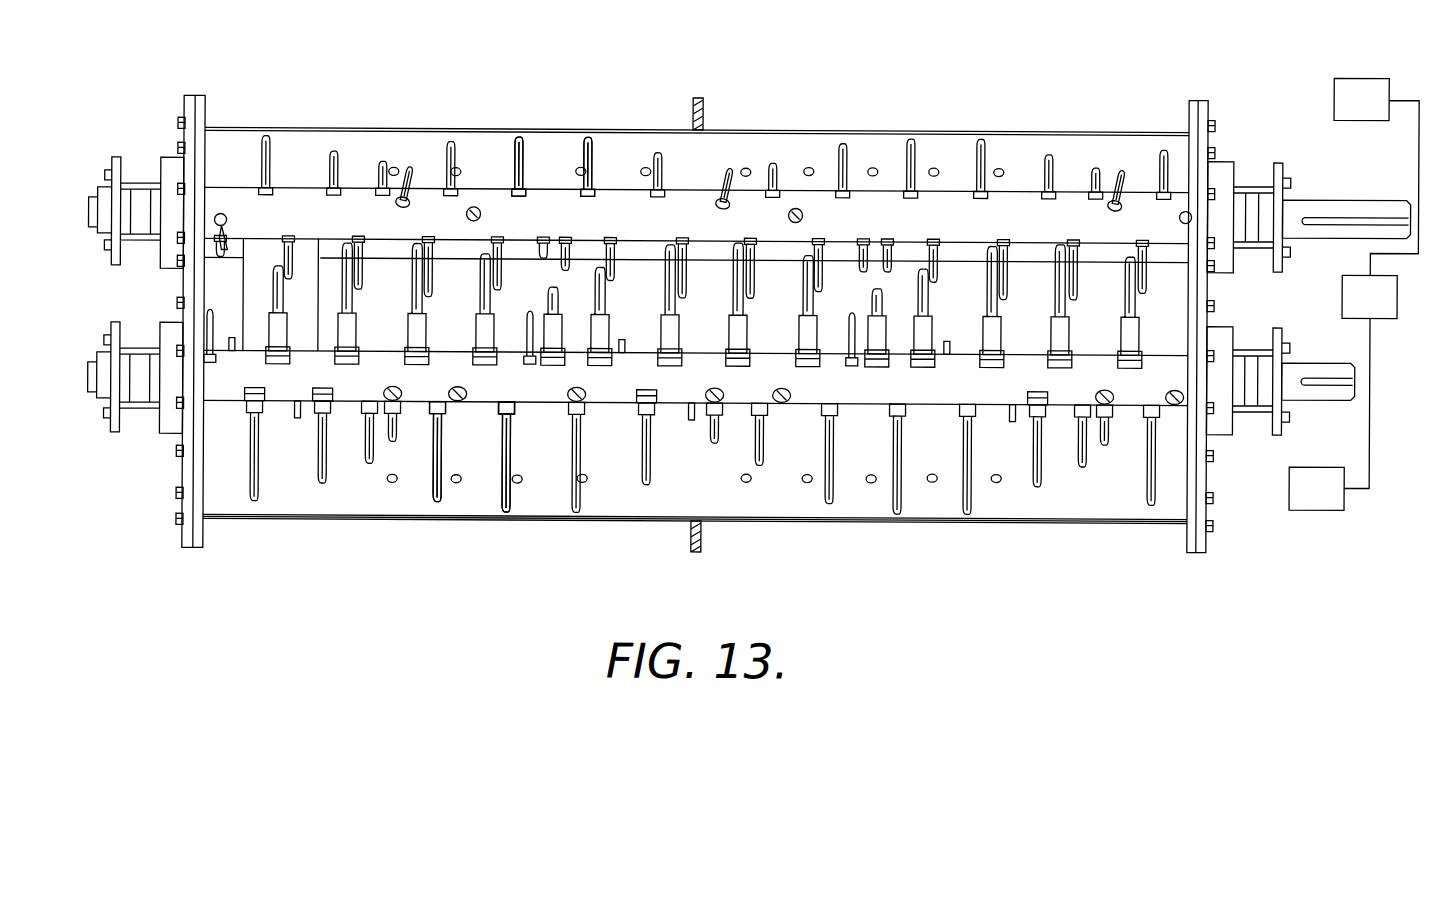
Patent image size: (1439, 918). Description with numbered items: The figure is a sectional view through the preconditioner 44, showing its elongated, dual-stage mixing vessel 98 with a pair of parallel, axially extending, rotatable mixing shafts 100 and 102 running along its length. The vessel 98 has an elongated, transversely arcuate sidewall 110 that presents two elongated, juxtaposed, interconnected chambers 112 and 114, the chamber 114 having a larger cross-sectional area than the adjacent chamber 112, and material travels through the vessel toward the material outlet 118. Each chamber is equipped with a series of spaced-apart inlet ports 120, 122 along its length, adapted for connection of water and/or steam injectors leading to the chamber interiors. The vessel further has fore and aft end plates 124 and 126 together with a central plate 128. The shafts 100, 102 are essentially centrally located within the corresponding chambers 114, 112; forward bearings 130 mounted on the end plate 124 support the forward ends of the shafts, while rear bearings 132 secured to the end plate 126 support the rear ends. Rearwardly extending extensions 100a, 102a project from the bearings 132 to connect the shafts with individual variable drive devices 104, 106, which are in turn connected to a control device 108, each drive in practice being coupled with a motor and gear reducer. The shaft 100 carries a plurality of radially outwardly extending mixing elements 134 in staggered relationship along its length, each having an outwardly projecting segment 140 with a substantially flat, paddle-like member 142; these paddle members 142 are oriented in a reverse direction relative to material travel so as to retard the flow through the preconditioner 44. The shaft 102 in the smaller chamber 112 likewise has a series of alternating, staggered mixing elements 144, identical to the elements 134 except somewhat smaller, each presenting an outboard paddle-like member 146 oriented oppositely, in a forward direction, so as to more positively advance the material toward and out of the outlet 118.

The preconditioner 44 is at (1063, 58).
The mixing vessel 98 is at (908, 525).
The mixing shaft 100 is at (284, 386).
The shaft extension 100a is at (1315, 392).
The mixing shaft 102 is at (297, 210).
The shaft extension 102a is at (1325, 202).
The variable drive device 104 is at (1360, 74).
The variable drive device 106 is at (1318, 507).
The control device 108 is at (1342, 289).
The sidewall 110 is at (1017, 523).
The chamber 112 is at (408, 146).
The chamber 114 is at (473, 497).
The material outlet 118 is at (256, 282).
The inlet ports 120 is at (808, 166).
The inlet ports 122 is at (746, 483).
The fore end plate 124 is at (190, 110).
The aft end plate 126 is at (1208, 110).
The central plate 128 is at (696, 98).
The forward bearings 130 is at (148, 171).
The rear bearings 132 is at (1248, 172).
The mixing elements 134 is at (430, 480).
The outwardly projecting segment 140 is at (511, 421).
The paddle-like member 142 is at (513, 502).
The mixing elements 144 is at (591, 140).
The paddle-like member 146 is at (520, 153).